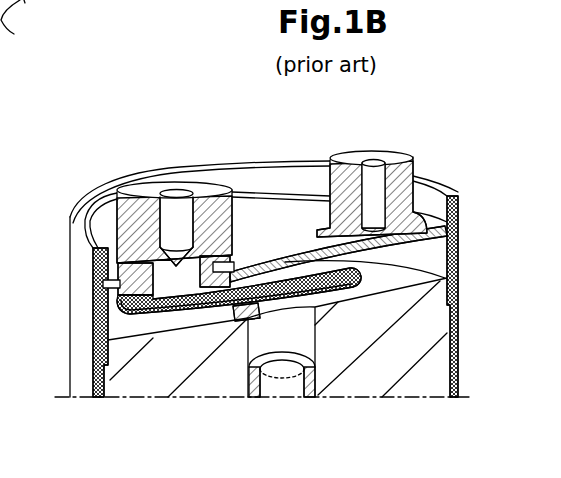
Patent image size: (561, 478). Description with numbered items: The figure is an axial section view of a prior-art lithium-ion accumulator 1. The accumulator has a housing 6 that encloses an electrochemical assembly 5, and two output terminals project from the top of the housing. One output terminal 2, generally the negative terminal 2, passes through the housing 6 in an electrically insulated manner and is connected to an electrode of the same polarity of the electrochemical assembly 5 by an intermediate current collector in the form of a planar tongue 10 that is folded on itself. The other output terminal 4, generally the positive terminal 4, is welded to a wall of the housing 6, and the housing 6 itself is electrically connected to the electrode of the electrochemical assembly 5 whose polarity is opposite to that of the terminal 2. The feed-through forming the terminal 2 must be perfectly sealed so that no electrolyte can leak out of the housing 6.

The prior art sensor assembly 1 is at (228, 123).
The output terminal 2 is at (140, 210).
The output terminal 4 is at (400, 174).
The electrochemical assembly 5 is at (430, 328).
The housing 6 is at (77, 266).
The planar tongue 10 is at (237, 310).